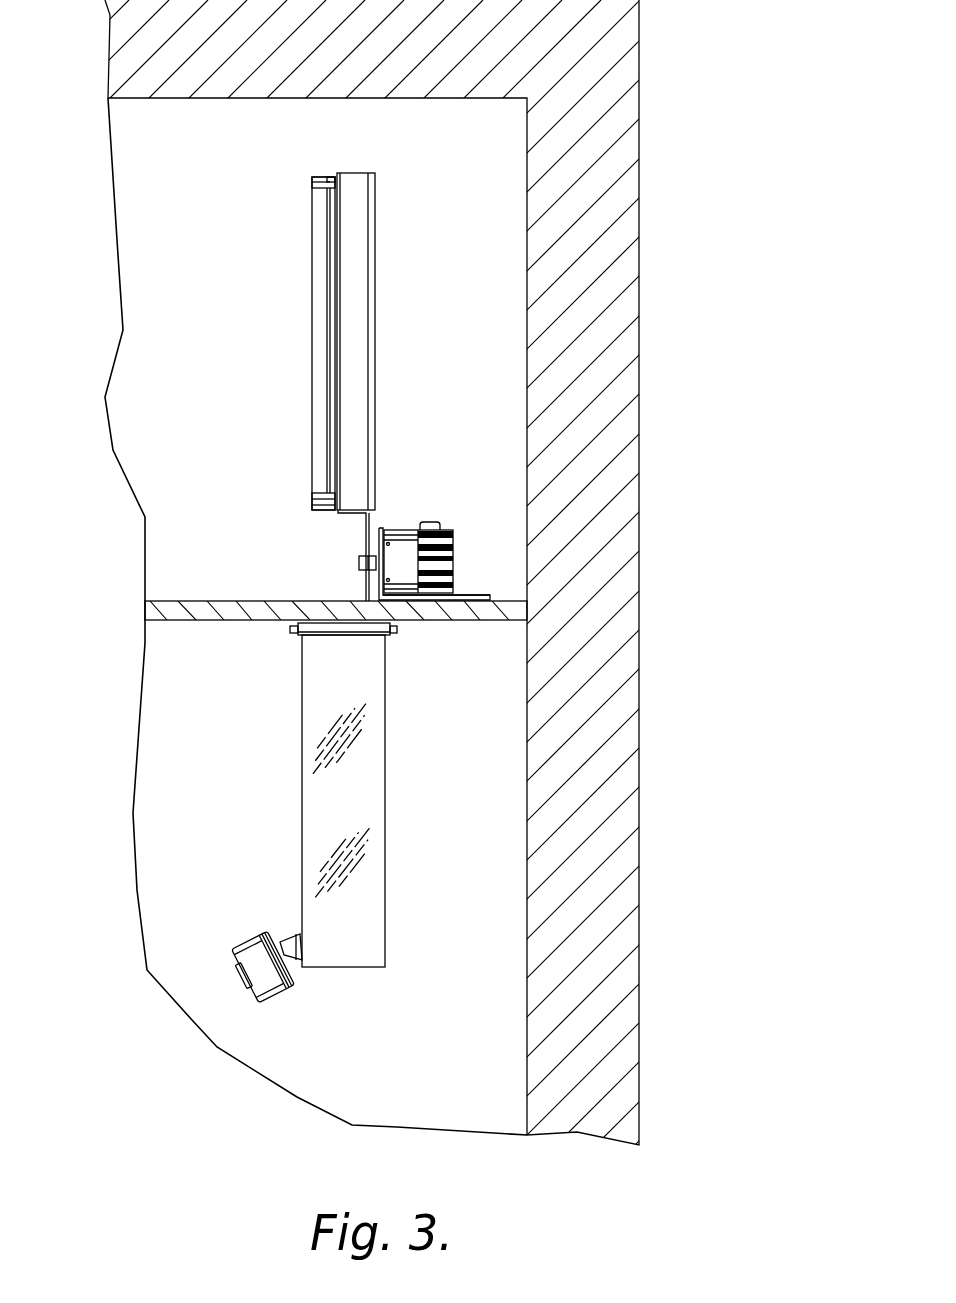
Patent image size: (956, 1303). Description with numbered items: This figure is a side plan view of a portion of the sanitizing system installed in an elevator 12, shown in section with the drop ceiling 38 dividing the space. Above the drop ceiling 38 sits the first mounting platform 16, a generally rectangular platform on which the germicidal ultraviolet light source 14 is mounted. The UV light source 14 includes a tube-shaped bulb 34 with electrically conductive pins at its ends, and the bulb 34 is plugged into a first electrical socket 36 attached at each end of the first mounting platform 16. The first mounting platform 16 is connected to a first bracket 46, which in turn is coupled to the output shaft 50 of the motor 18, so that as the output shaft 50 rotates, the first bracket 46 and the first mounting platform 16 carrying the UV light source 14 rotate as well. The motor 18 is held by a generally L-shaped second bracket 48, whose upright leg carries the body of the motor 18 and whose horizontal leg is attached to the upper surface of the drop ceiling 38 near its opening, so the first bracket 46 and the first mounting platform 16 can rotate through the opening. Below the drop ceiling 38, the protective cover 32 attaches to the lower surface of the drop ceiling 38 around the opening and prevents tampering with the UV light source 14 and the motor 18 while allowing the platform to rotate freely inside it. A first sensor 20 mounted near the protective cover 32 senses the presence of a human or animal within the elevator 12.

The elevator 12 is at (664, 126).
The germicidal ultraviolet light source 14 is at (226, 213).
The first mounting platform 16 is at (362, 256).
The motor 18 is at (437, 530).
The first sensor 20 is at (237, 953).
The protective cover 32 is at (373, 853).
The tube-shaped bulb 34 is at (318, 274).
The first electrical socket 36 is at (321, 180).
The drop ceiling 38 is at (233, 608).
The first bracket 46 is at (367, 522).
The second bracket 48 is at (468, 597).
The output shaft 50 is at (358, 563).